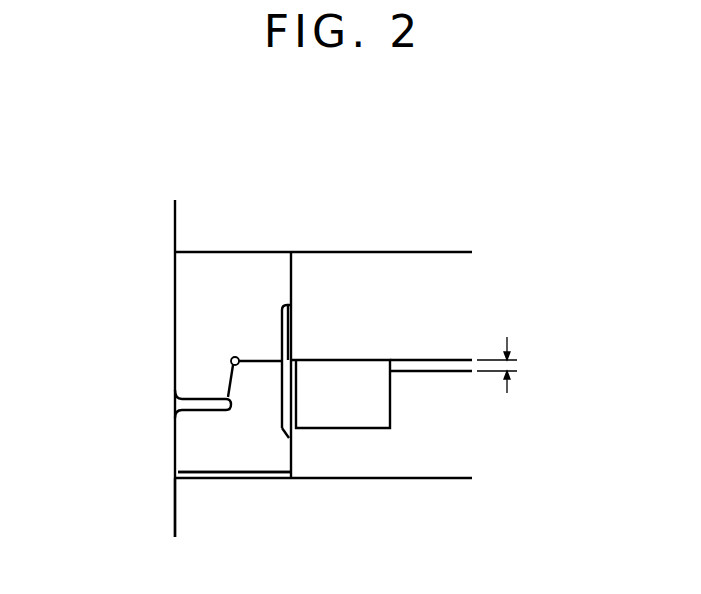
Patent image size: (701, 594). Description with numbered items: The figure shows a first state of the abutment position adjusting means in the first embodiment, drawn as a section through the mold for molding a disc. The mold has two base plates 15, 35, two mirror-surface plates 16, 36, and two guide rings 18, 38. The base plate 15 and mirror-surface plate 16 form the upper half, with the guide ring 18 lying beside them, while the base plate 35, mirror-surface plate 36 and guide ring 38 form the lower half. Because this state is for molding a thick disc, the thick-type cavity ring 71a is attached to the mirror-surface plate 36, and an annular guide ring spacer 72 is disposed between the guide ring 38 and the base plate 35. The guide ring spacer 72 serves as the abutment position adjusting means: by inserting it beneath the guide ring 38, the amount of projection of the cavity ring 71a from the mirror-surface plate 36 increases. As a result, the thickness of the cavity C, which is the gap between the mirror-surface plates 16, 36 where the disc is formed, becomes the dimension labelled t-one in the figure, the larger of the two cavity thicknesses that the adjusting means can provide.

The base plate 15 is at (188, 222).
The mirror-surface plate 16 is at (389, 273).
The guide ring 18 is at (221, 275).
The base plate 35 is at (190, 508).
The mirror-surface plate 36 is at (440, 461).
The guide ring 38 is at (237, 452).
The thick-type cavity ring 71a is at (325, 377).
The annular guide ring spacer 72 is at (262, 477).
The cavity C is at (430, 363).